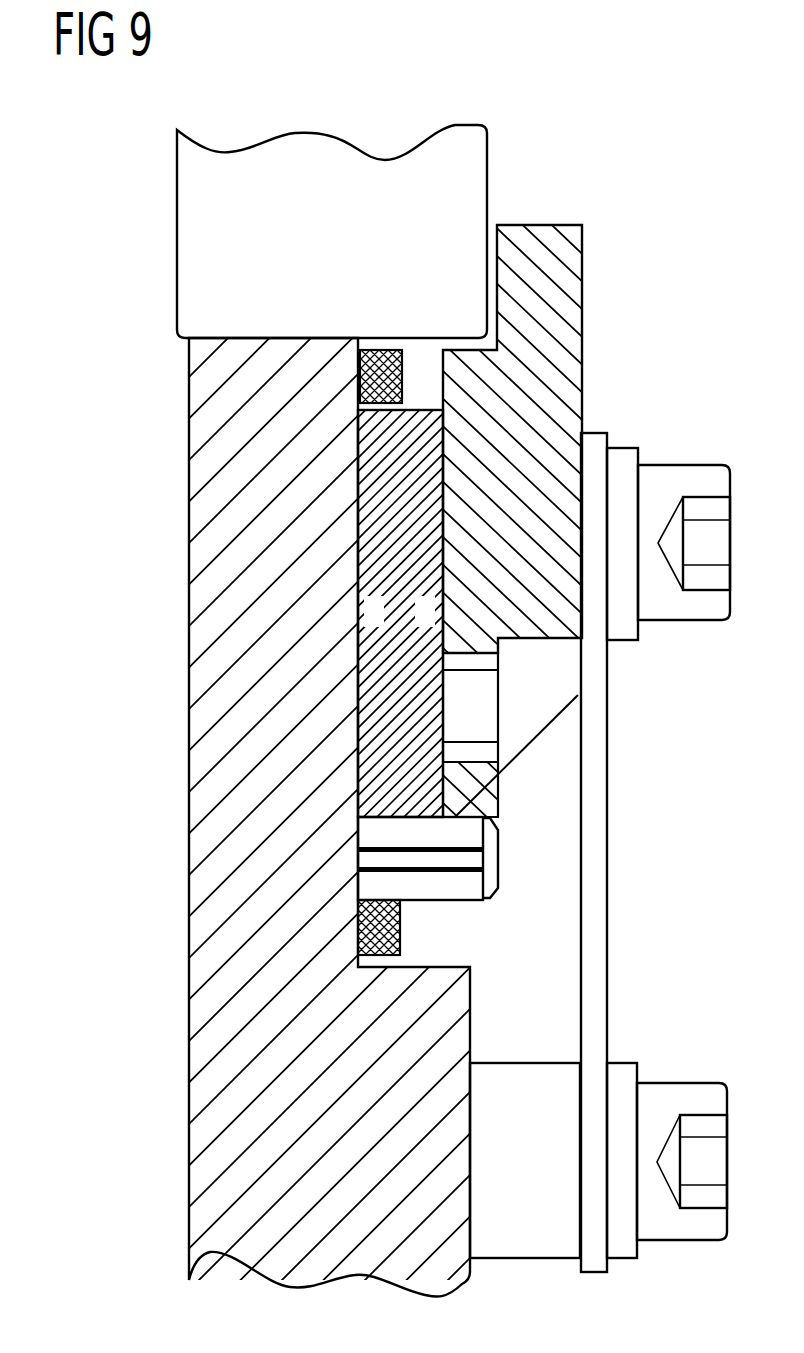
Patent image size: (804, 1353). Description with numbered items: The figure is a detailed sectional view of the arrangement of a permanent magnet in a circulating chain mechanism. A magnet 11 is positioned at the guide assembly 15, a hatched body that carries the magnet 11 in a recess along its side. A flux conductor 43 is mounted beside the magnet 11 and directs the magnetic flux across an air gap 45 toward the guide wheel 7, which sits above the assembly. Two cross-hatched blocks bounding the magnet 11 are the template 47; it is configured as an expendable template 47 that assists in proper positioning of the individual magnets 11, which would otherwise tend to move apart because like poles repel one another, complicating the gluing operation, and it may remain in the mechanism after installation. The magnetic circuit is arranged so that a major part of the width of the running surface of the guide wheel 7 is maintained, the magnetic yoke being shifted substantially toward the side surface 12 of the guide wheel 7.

The guide wheel 7 is at (302, 186).
The magnet 11 is at (378, 723).
The side surface 12 is at (488, 295).
The guide assembly 15 is at (230, 531).
The flux conductor 43 is at (555, 405).
The air gap 45 is at (491, 250).
The template 47 is at (380, 377).